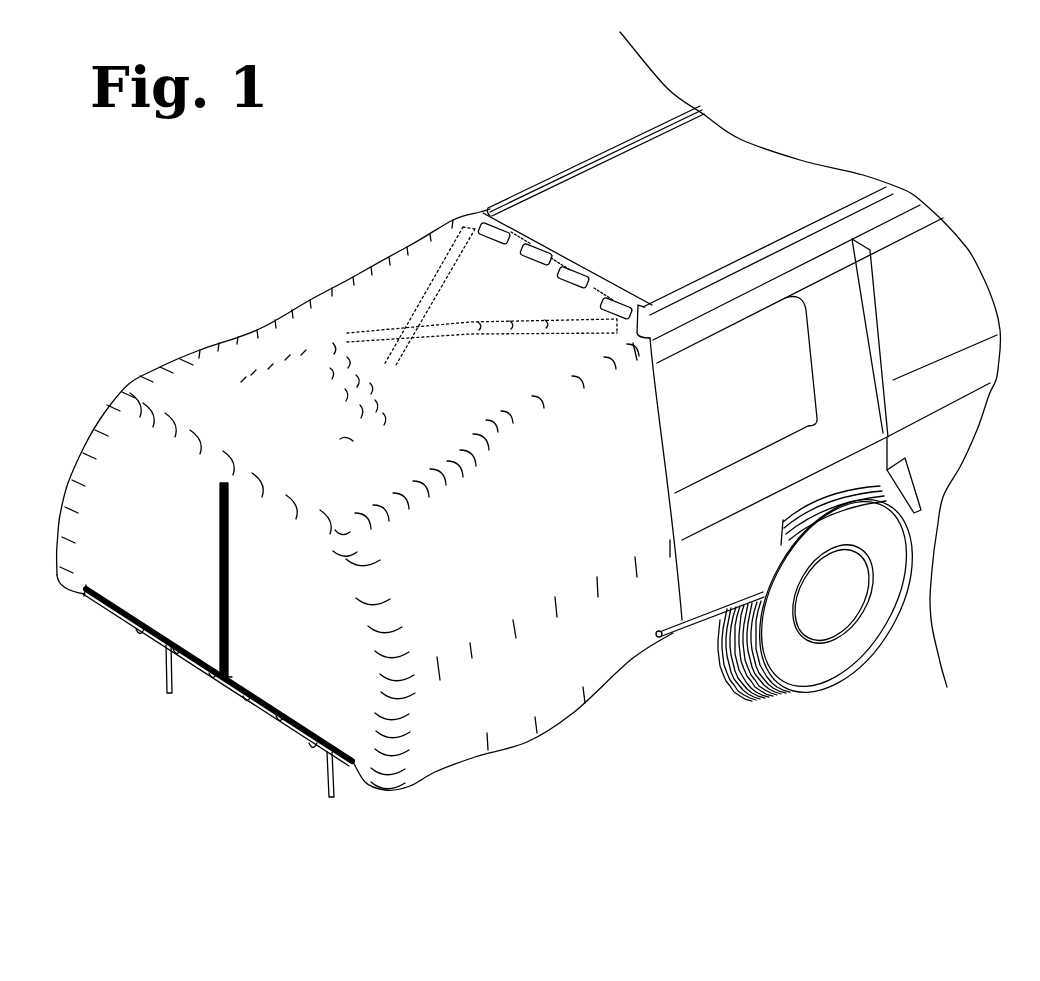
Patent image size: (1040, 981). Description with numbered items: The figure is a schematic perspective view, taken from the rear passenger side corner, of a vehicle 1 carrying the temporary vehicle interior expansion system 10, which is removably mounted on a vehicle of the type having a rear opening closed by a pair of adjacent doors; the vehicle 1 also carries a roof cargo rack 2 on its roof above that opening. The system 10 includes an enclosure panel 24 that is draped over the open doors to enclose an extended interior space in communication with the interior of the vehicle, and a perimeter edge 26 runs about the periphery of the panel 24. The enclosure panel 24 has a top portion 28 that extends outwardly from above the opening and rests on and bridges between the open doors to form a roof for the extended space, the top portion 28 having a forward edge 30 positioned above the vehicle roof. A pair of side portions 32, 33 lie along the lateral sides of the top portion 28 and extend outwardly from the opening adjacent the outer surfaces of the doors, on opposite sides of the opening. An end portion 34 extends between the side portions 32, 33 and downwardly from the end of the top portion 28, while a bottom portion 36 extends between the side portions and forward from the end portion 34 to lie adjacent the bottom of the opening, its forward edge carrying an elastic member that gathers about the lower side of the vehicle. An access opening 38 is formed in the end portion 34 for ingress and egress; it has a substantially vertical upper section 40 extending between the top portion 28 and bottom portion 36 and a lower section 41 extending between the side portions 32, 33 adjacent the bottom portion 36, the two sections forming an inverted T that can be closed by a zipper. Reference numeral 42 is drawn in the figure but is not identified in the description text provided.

The vehicle 1 is at (827, 130).
The roof cargo rack 2 is at (867, 190).
The temporary vehicle interior expansion system 10 is at (428, 178).
The enclosure panel 24 is at (533, 682).
The perimeter edge 26 is at (663, 420).
The top portion 28 is at (223, 370).
The forward edge 30 is at (573, 253).
The side portion 32 is at (160, 370).
The side portion 33 is at (640, 662).
The end portion 34 is at (313, 693).
The bottom portion 36 is at (497, 748).
The access opening 38 is at (207, 606).
The upper section 40 is at (228, 578).
The lower section 41 is at (100, 608).
The post connector 42 is at (227, 617).